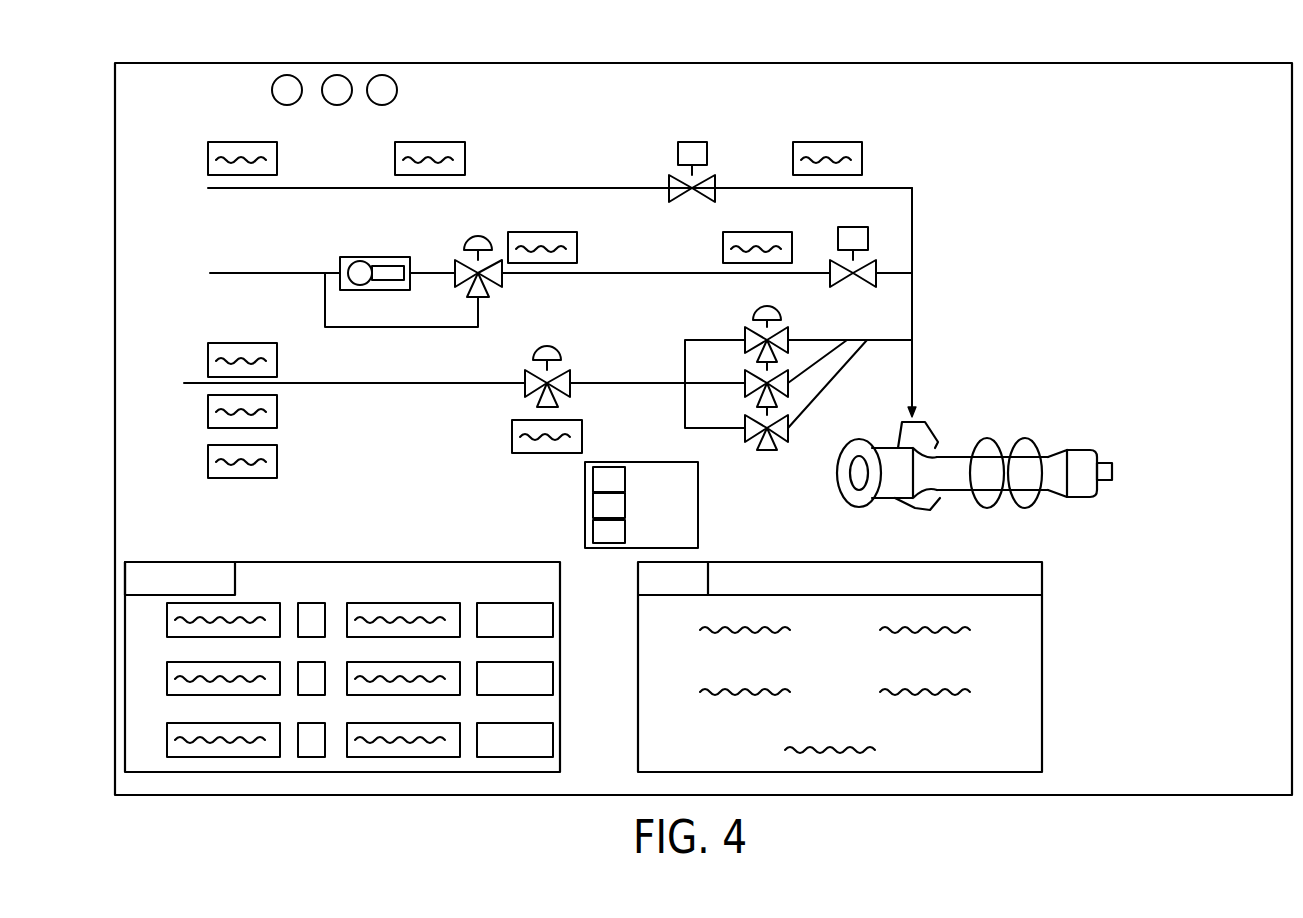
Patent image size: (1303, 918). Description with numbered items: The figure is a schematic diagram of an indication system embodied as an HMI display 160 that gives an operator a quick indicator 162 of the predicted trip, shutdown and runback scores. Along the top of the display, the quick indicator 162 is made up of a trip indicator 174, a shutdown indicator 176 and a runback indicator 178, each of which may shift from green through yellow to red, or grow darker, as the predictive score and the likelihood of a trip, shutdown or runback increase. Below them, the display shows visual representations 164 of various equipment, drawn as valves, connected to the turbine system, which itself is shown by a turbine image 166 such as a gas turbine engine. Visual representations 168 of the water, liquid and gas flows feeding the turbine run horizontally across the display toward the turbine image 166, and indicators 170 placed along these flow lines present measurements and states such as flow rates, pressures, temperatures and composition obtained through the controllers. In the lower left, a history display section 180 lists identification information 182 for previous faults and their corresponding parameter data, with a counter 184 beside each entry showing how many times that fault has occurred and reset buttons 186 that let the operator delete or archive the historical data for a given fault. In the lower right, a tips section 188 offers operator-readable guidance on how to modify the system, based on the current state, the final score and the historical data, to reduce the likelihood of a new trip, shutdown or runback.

The HMI display 160 is at (75, 105).
The quick indicator 162 is at (334, 83).
The visual representations of equipment 164 is at (707, 150).
The turbine image 166 is at (1087, 447).
The visual representations of flows 168 is at (222, 202).
The indicators 170 is at (210, 157).
The trip indicator 174 is at (272, 90).
The shutdown indicator 176 is at (337, 106).
The runback indicator 178 is at (425, 90).
The history display section 180 is at (311, 636).
The identification information 182 is at (460, 597).
The counter 184 is at (335, 597).
The reset buttons 186 is at (550, 597).
The tips section 188 is at (622, 648).